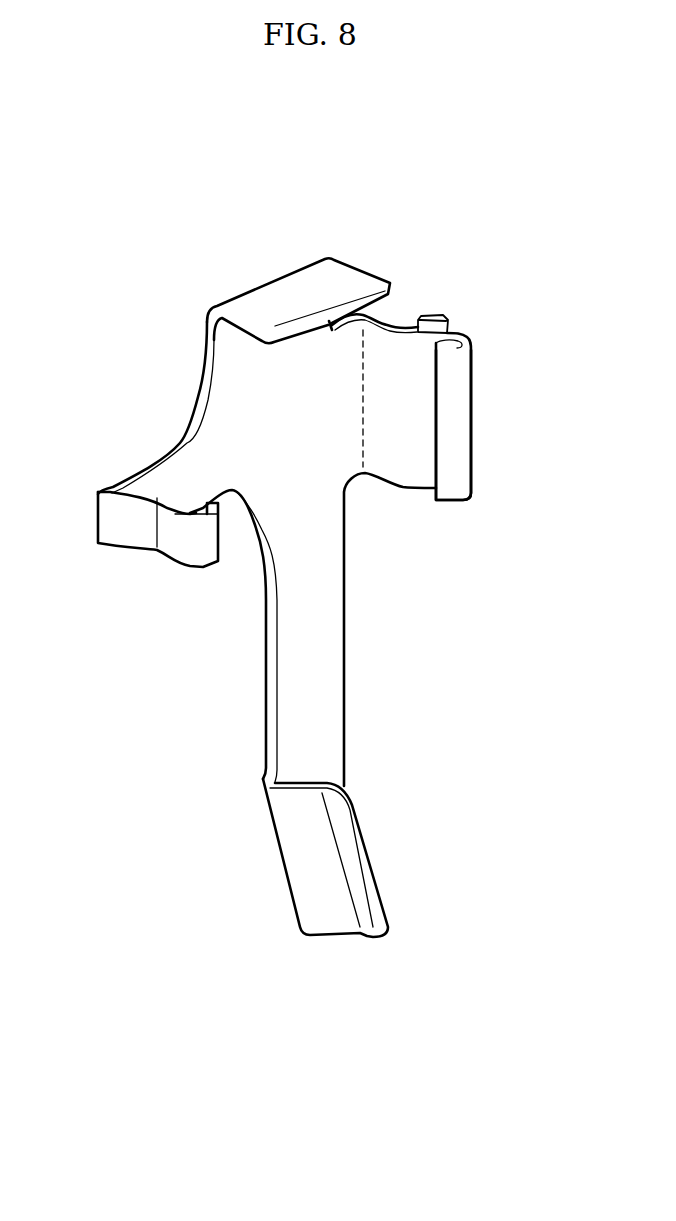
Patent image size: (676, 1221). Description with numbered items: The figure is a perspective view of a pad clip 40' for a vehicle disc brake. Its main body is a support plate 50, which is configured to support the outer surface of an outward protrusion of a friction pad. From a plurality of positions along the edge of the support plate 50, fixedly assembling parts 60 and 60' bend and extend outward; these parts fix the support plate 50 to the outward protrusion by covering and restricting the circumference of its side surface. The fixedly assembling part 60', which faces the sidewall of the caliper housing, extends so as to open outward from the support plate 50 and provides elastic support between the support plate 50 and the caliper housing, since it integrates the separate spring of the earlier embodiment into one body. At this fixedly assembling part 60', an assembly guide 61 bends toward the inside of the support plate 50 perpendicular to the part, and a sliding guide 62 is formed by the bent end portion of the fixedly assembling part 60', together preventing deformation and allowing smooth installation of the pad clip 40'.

The pad clip 40' is at (285, 546).
The support plate 50 is at (308, 457).
The fixedly assembling part 60 is at (232, 633).
The fixedly assembling part 60' is at (474, 416).
The assembly guide 61 is at (431, 316).
The sliding guide 62 is at (458, 384).